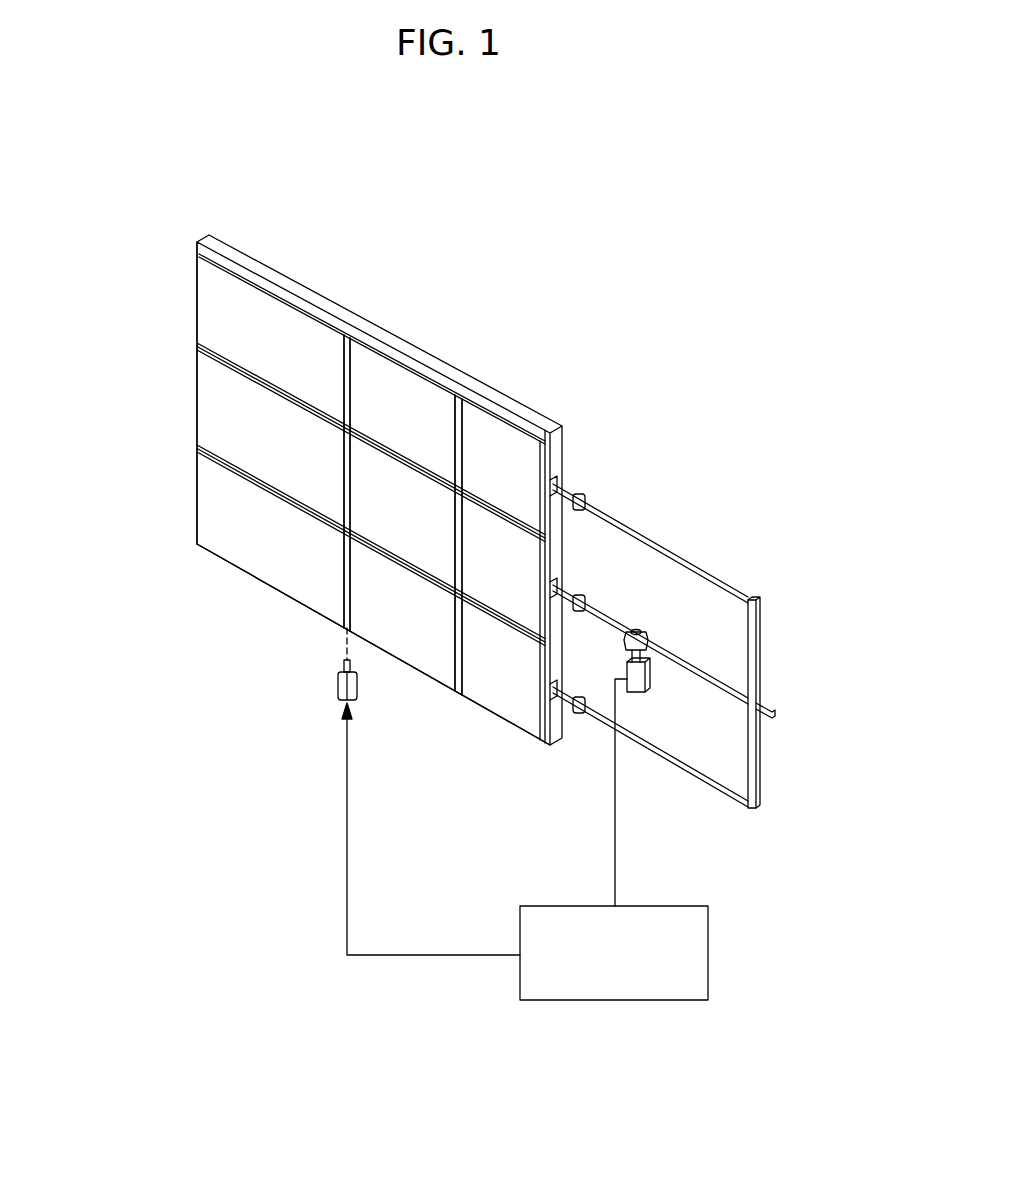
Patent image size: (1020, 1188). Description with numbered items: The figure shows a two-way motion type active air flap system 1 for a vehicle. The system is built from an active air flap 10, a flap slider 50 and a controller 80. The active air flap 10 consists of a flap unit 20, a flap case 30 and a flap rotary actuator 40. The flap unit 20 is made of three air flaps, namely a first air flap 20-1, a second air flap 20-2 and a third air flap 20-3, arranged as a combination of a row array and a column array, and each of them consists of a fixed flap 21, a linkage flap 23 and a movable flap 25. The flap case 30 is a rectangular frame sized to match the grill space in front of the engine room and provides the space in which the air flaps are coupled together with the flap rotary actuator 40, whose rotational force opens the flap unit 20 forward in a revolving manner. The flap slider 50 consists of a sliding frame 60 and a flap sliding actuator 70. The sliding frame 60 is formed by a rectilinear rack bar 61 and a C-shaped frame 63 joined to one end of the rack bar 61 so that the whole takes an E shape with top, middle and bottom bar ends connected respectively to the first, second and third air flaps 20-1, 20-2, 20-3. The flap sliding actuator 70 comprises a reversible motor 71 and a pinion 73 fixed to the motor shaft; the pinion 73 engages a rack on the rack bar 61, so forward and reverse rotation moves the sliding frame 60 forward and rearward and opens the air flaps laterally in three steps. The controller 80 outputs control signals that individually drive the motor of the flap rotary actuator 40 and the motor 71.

The active air flap system 1 is at (495, 137).
The active air flap 10 is at (238, 608).
The flap unit 20 is at (112, 297).
The first air flap 20-1 is at (190, 250).
The second air flap 20-2 is at (190, 350).
The third air flap 20-3 is at (190, 452).
The fixed flap 21 is at (315, 550).
The linkage flap 23 is at (428, 612).
The movable flap 25 is at (525, 662).
The flap case 30 is at (244, 244).
The flap rotary actuator 40 is at (338, 688).
The flap slider 50 is at (758, 503).
The sliding frame 60 is at (698, 456).
The rack bar 61 is at (606, 610).
The C-shaped frame 63 is at (693, 563).
The flap sliding actuator 70 is at (657, 843).
The motor 71 is at (647, 652).
The pinion 73 is at (648, 668).
The controller 80 is at (710, 952).